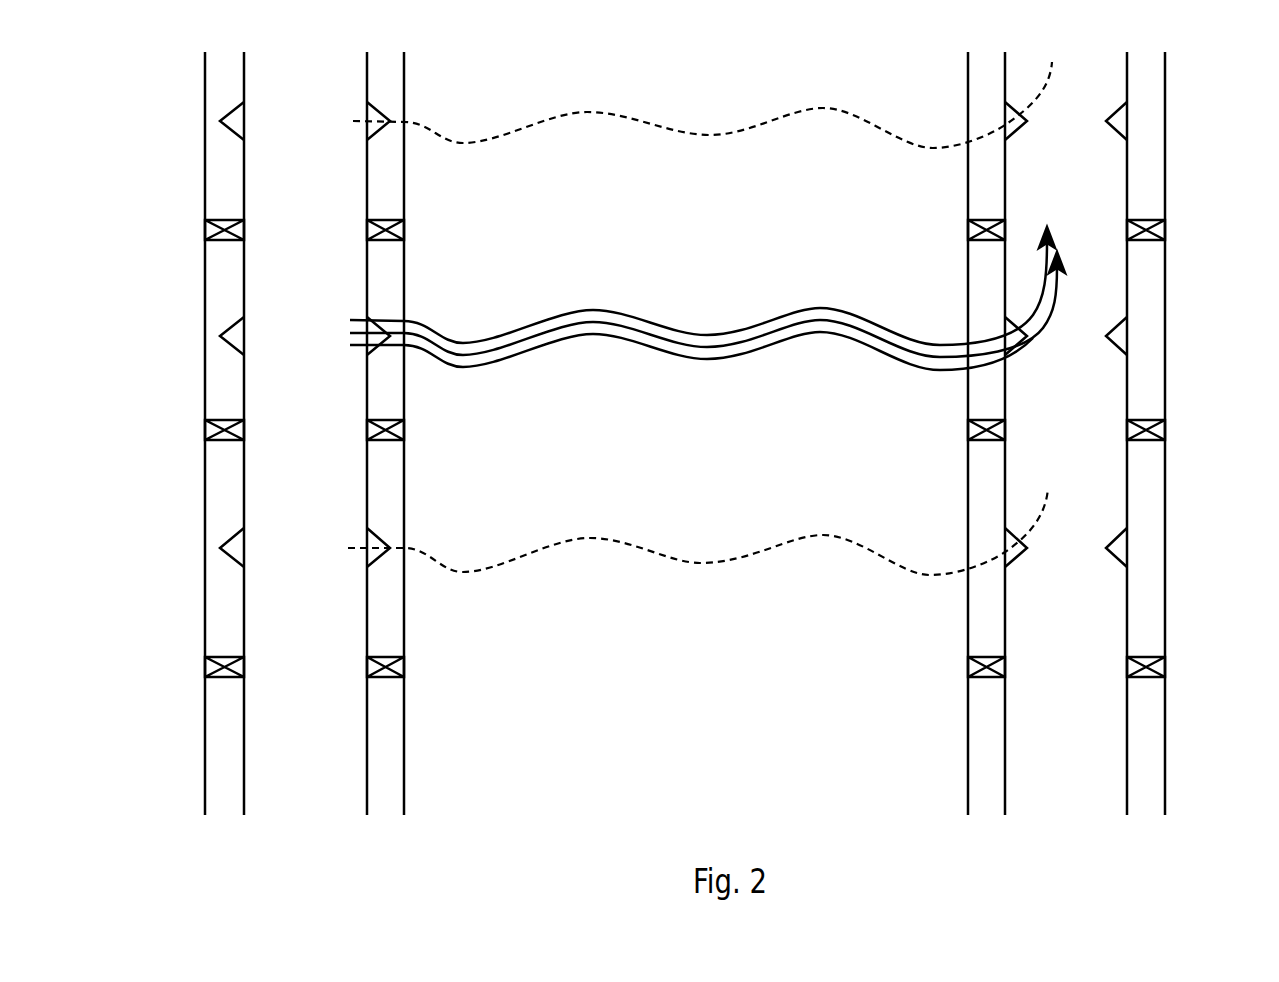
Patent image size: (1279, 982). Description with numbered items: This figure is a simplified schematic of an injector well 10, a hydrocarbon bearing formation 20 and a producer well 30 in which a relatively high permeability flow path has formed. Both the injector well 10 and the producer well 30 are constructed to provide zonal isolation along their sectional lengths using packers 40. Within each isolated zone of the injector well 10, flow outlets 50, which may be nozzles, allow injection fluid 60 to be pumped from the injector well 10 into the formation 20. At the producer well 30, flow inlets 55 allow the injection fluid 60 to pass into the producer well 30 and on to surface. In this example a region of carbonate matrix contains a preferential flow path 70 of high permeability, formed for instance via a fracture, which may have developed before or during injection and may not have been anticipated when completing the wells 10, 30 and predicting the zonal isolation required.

The injector well 10 is at (318, 287).
The hydrocarbon bearing formation 20 is at (713, 277).
The producer well 30 is at (1086, 399).
The packer 40 is at (217, 225).
The flow outlet 50 is at (232, 547).
The flow inlet 55 is at (1120, 545).
The injection fluid 60 is at (643, 120).
The preferential flow path 70 is at (628, 312).